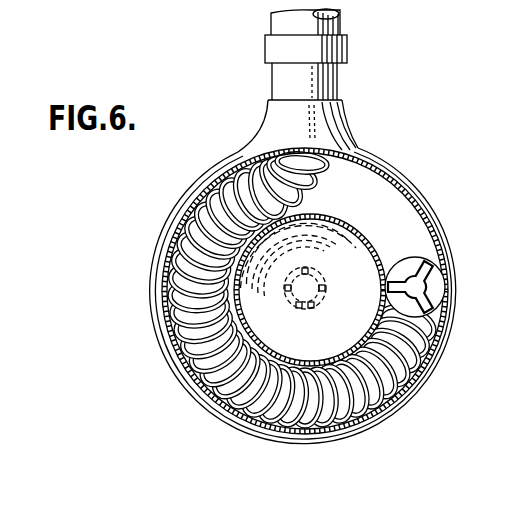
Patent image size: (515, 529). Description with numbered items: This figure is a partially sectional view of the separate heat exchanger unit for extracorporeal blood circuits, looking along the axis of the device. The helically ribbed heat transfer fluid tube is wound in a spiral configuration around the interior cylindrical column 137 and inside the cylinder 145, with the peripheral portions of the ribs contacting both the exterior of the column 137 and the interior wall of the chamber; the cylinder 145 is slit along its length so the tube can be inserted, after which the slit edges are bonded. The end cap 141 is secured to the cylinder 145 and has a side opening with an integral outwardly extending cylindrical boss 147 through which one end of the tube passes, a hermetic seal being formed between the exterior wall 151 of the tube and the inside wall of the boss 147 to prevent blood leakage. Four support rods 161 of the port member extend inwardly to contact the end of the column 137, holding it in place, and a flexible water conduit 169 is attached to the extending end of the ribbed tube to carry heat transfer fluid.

The flexible water conduit 169 is at (268, 20).
The exterior wall 151 is at (337, 87).
The cylindrical boss 147 is at (341, 118).
The cylinder 145 is at (398, 172).
The end cap 141 is at (438, 210).
The interior cylindrical column 137 is at (337, 219).
The support rods 161 is at (313, 266).